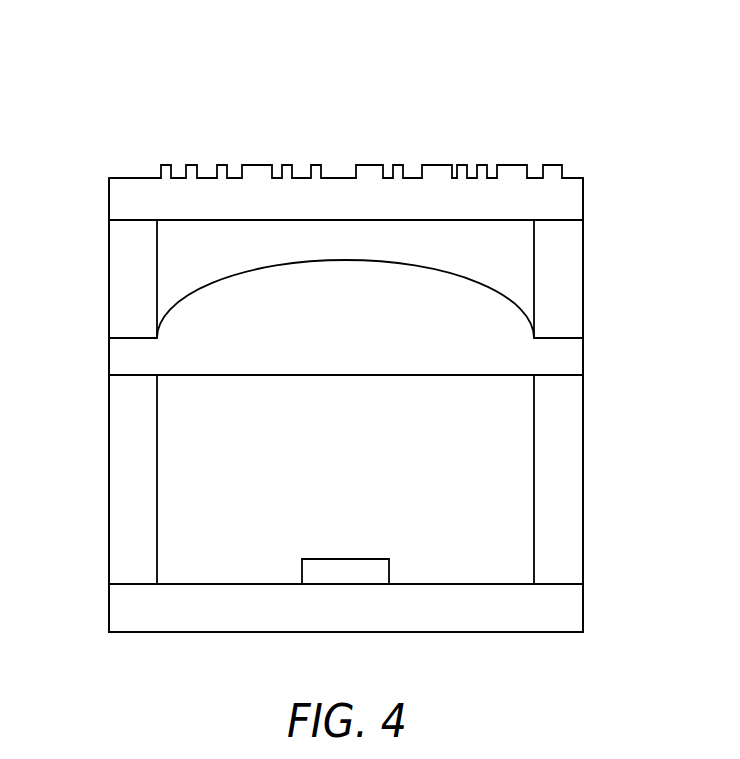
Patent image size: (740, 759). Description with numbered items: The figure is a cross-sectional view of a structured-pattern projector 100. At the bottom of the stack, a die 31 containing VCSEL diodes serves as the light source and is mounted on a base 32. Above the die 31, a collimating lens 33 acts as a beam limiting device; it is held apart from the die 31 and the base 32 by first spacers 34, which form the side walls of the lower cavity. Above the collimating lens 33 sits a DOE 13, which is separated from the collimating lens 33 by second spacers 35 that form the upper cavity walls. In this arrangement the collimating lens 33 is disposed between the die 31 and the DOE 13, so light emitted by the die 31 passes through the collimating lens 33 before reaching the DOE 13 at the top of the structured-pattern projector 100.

The structured-pattern projector 100 is at (83, 63).
The DOE 13 is at (577, 203).
The second spacers 35 is at (577, 286).
The collimating lens 33 is at (468, 300).
The first spacers 34 is at (577, 496).
The die 31 is at (360, 565).
The base 32 is at (577, 608).